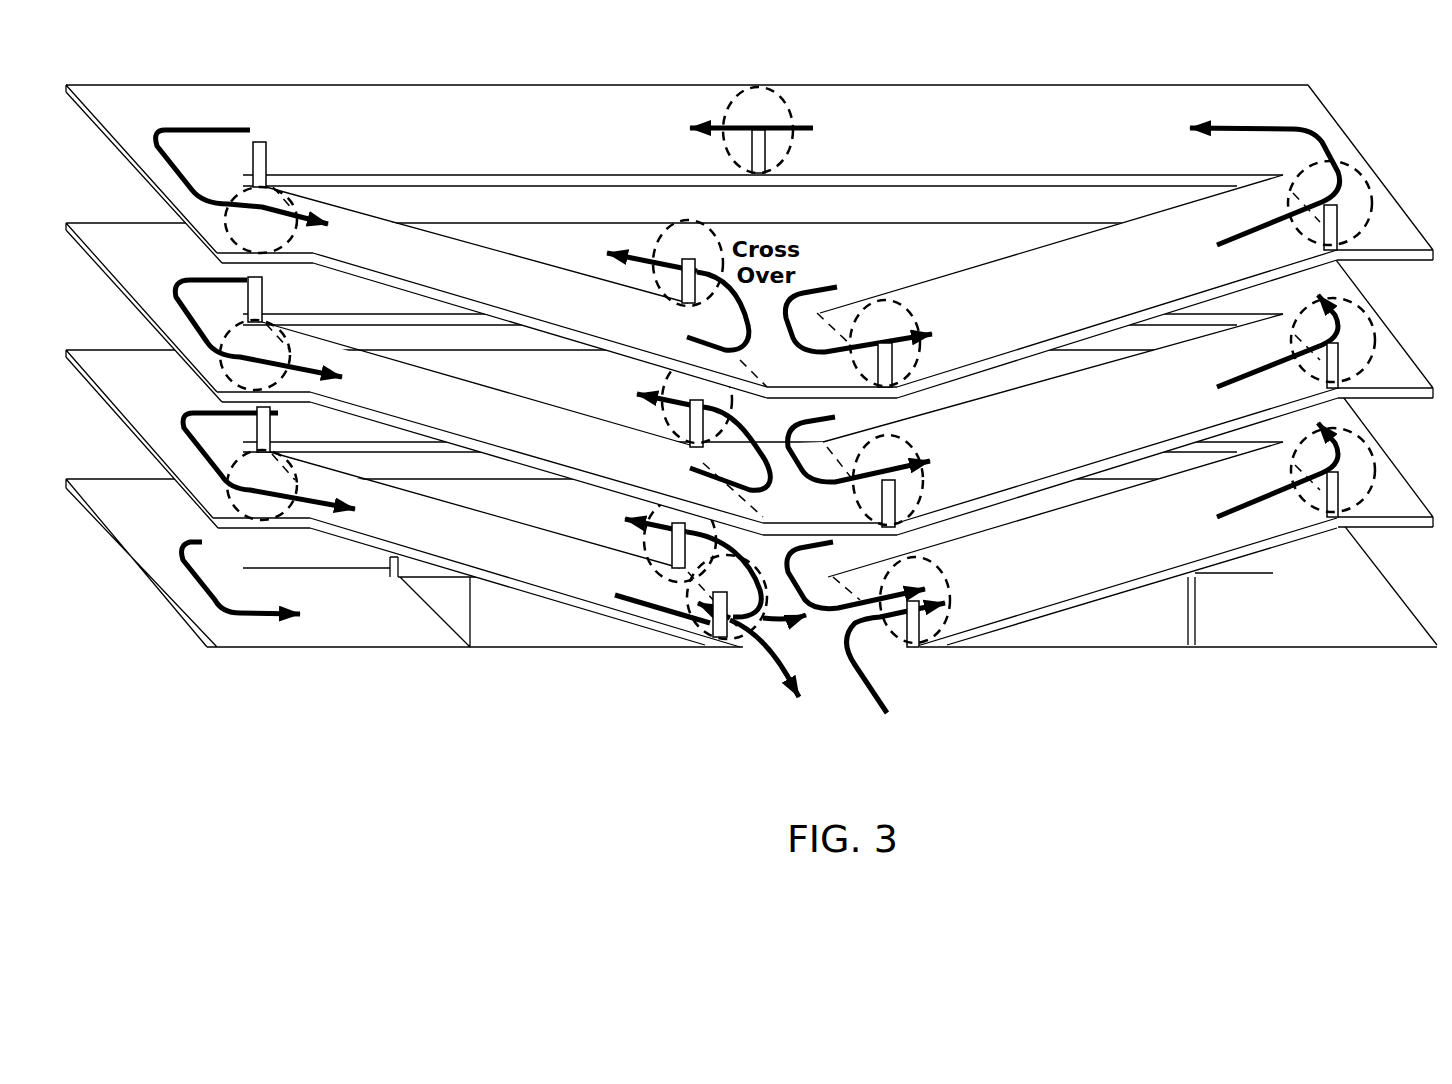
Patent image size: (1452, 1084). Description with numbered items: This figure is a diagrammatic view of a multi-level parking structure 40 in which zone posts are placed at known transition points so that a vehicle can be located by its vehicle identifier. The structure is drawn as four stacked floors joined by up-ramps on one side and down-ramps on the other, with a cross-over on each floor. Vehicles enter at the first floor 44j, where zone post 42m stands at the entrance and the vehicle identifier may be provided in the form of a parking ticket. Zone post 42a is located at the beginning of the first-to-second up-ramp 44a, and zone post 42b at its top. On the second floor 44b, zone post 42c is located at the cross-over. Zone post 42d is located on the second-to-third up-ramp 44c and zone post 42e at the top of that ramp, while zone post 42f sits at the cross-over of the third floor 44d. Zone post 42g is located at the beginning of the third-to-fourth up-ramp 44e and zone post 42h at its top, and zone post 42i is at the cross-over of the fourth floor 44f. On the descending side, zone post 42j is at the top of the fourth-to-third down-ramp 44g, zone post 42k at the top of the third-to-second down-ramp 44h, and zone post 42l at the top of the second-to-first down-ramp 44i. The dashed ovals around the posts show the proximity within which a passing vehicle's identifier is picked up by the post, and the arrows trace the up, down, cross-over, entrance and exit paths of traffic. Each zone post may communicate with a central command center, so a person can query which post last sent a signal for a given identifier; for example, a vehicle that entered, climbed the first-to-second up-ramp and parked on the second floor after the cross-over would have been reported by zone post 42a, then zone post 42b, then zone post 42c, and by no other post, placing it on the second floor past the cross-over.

The multi-level parking structure 40 is at (607, 58).
The zone post 42a is at (672, 550).
The zone post 42b is at (1340, 503).
The zone post 42c is at (690, 433).
The zone post 42d is at (880, 512).
The zone post 42e is at (1340, 375).
The zone post 42f is at (684, 290).
The zone post 42g is at (878, 373).
The zone post 42h is at (1340, 233).
The zone post 42i is at (767, 163).
The zone post 42j is at (268, 152).
The zone post 42k is at (262, 288).
The zone post 42l is at (270, 425).
The zone post 42m is at (723, 637).
The first-to-second up-ramp 44a is at (1150, 540).
The second floor 44b is at (155, 382).
The second-to-third up-ramp 44c is at (1143, 422).
The third floor 44d is at (147, 255).
The third-to-fourth up-ramp 44e is at (1145, 282).
The fourth floor 44f is at (147, 117).
The fourth-to-third down-ramp 44g is at (438, 269).
The third-to-second down-ramp 44h is at (435, 405).
The second-to-first down-ramp 44i is at (433, 535).
The first floor 44j is at (147, 511).